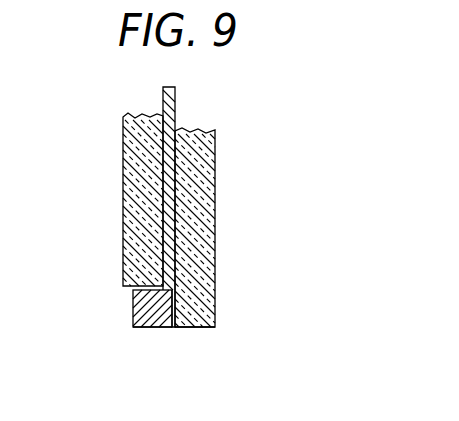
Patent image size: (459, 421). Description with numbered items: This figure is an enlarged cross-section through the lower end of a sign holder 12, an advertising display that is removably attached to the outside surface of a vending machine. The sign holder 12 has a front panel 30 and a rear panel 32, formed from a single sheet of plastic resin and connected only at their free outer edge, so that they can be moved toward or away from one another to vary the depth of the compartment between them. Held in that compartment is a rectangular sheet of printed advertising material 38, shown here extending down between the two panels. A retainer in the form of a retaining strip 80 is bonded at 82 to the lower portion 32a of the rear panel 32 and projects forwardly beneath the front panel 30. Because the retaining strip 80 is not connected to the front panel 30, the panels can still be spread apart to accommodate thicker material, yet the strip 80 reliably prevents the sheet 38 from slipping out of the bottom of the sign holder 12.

The sign holder 12 is at (110, 108).
The front panel 30 is at (125, 182).
The rear panel 32 is at (215, 200).
The lower portion of the back panel 32a is at (215, 320).
The printed advertising material 38 is at (176, 95).
The retaining strip 80 is at (133, 313).
The bond 82 is at (138, 328).